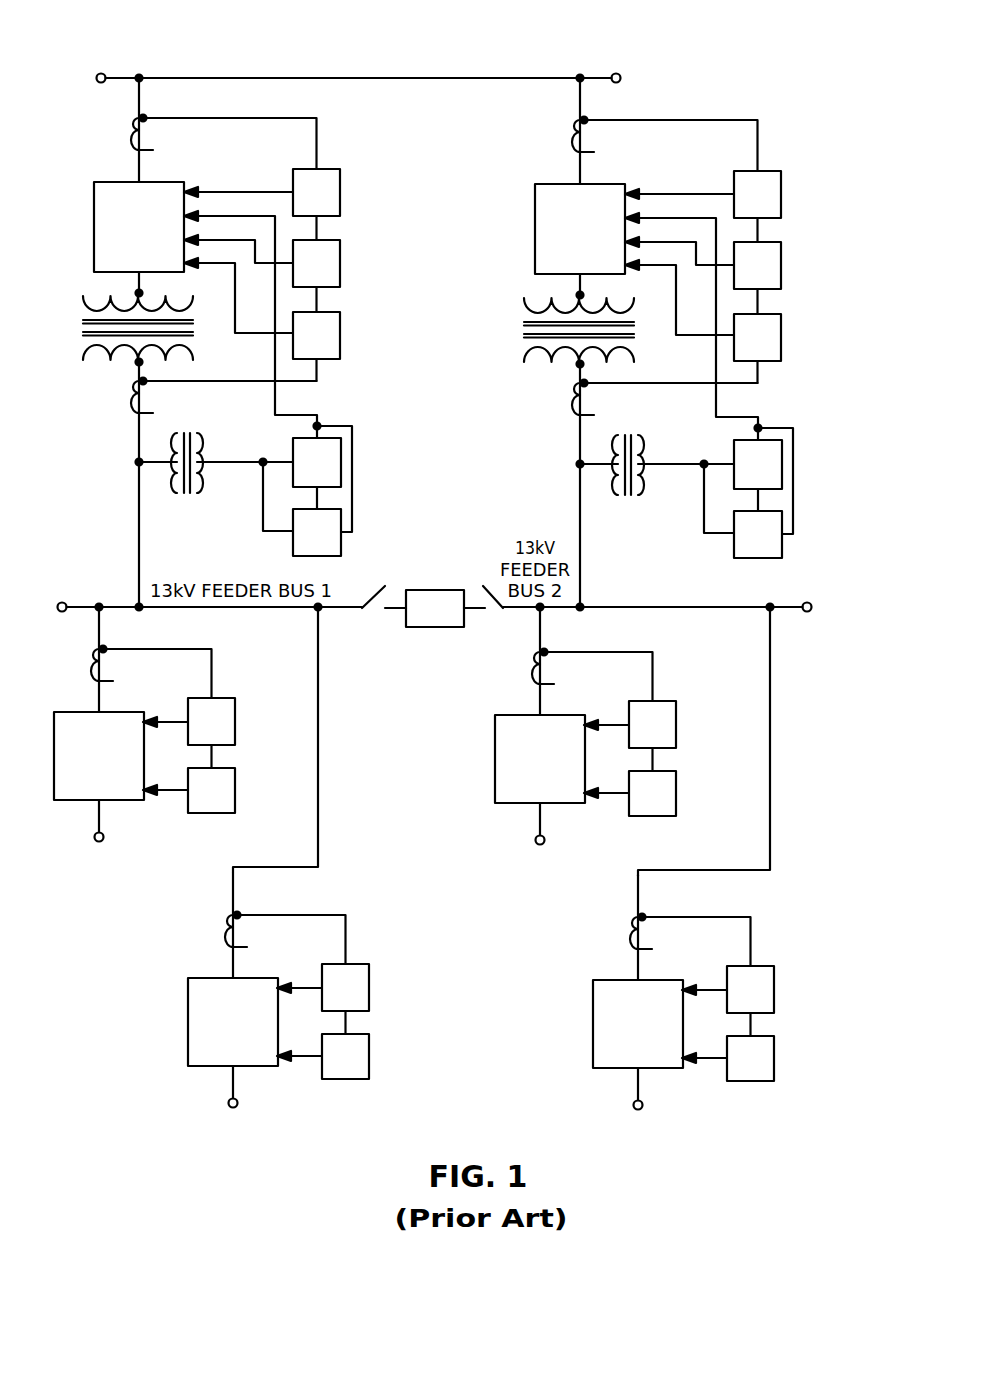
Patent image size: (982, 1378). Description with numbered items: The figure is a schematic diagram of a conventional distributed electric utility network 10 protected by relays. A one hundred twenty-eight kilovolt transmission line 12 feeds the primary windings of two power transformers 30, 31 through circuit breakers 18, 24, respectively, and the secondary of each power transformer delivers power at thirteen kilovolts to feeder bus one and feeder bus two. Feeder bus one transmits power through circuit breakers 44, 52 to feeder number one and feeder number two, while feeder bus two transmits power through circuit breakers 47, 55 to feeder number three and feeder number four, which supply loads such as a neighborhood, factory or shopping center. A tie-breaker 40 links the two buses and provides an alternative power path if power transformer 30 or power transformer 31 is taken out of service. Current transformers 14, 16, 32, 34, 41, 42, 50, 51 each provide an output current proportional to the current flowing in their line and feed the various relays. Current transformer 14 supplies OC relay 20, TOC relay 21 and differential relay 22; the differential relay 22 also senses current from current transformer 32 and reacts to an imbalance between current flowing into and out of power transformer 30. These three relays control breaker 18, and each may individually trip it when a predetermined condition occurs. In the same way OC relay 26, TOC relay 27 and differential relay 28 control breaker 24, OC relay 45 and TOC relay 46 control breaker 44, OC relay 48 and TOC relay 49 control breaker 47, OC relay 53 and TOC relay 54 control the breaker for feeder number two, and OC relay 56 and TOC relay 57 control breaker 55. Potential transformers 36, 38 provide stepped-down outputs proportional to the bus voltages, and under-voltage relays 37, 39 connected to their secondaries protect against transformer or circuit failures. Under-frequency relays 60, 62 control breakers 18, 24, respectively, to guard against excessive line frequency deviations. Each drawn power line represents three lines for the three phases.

The power distribution system 10 is at (811, 38).
The 128kV transmission line 12 is at (172, 75).
The current transformer 14 is at (130, 126).
The current transformer 16 is at (637, 142).
The circuit breaker 18 is at (94, 228).
The OC relay 20 is at (343, 197).
The TOC relay 21 is at (343, 268).
The differential relay 22 is at (343, 340).
The circuit breaker 24 is at (551, 229).
The OC relay 26 is at (737, 206).
The TOC relay 27 is at (737, 275).
The differential relay 28 is at (738, 321).
The power transformer 30 is at (83, 303).
The power transformer 31 is at (554, 328).
The current transformer 32 is at (130, 386).
The current transformer 34 is at (631, 396).
The potential transformer 36 is at (197, 493).
The under-voltage relay 37 is at (293, 449).
The potential transformer 38 is at (656, 497).
The under-voltage relay 39 is at (755, 373).
The tie-breaker 40 is at (456, 588).
The current transformer 41 is at (94, 654).
The current transformer 42 is at (561, 675).
The circuit breaker 44 is at (130, 705).
The OC relay 45 is at (238, 724).
The TOC relay 46 is at (238, 794).
The circuit breaker 47 is at (514, 797).
The OC relay 48 is at (665, 736).
The TOC relay 49 is at (665, 793).
The current transformer 50 is at (254, 936).
The current transformer 51 is at (664, 938).
The circuit breaker 52 is at (205, 1062).
The OC relay 53 is at (357, 999).
The TOC relay 54 is at (357, 1056).
The circuit breaker 55 is at (610, 1065).
The OC relay 56 is at (762, 1001).
The TOC relay 57 is at (762, 1058).
The under-frequency relay 60 is at (293, 549).
The under-frequency relay 62 is at (776, 524).